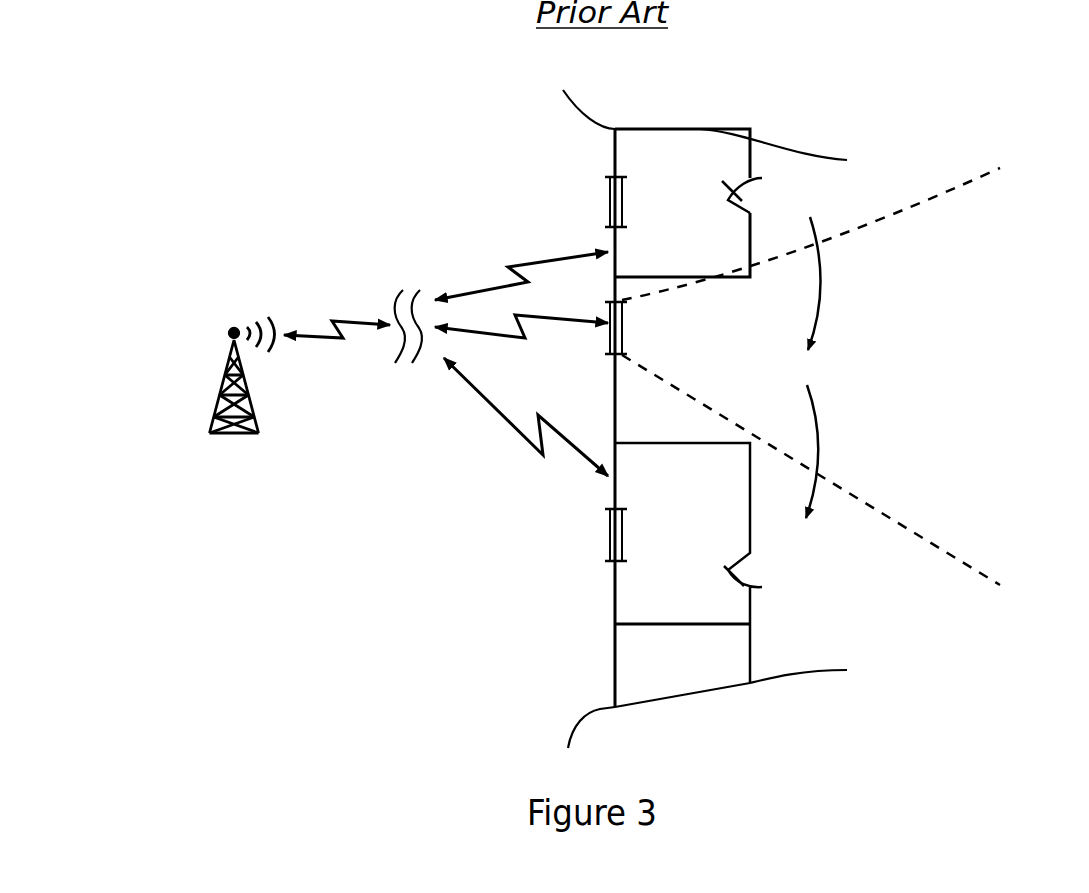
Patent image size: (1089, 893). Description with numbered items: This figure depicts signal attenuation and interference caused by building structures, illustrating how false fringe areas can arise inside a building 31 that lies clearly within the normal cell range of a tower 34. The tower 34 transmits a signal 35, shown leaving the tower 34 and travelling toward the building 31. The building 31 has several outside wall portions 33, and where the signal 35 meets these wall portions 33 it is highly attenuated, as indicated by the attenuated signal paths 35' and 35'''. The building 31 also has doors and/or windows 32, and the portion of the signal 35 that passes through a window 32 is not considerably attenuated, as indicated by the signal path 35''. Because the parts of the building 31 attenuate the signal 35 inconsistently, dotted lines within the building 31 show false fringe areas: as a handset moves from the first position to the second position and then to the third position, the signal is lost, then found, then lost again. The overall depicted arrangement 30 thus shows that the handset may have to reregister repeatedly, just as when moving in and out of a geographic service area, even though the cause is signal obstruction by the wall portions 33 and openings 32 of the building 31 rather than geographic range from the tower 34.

The prior art building structure 30 is at (922, 133).
The building 31 is at (598, 152).
The doors and/or windows 32 is at (622, 208).
The outside wall portions 33 is at (615, 160).
The tower 34 is at (222, 392).
The signal 35 is at (337, 310).
The highly attenuated signal 35' is at (501, 294).
The non-attenuated signal 35'' is at (521, 309).
The highly attenuated signal 35''' is at (526, 417).